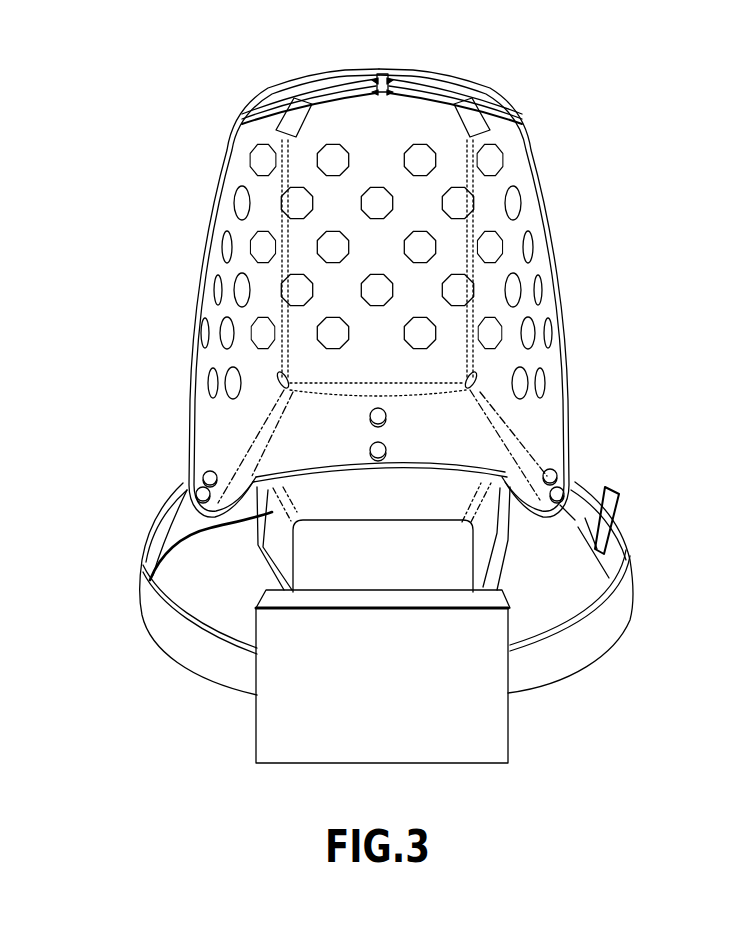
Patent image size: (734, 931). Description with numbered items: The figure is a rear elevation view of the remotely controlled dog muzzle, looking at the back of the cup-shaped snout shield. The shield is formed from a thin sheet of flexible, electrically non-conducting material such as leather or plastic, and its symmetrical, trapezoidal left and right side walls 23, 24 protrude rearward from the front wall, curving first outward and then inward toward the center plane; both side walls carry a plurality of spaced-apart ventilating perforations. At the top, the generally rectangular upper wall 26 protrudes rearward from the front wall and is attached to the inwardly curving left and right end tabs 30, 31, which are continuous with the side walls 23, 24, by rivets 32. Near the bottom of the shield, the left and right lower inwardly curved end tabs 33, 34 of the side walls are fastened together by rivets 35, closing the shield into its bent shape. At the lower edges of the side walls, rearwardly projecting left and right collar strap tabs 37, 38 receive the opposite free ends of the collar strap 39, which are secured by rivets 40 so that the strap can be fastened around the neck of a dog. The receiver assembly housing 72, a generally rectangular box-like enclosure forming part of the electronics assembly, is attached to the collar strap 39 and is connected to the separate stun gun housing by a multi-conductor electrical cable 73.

The left side wall 23 is at (213, 180).
The right side wall 24 is at (546, 180).
The upper wall 26 is at (341, 70).
The left end tab 30 is at (318, 77).
The right end tab 31 is at (453, 77).
The rivets 32 is at (300, 116).
The left lower inwardly curved end tab 33 is at (313, 435).
The right lower inwardly curved end tab 34 is at (455, 445).
The rivets 35 is at (386, 418).
The left collar strap tab 37 is at (243, 513).
The right collar strap tab 38 is at (545, 517).
The collar strap 39 is at (193, 668).
The rivets 40 is at (200, 476).
The receiver assembly housing 72 is at (510, 723).
The multi-conductor electrical cable 73 is at (211, 530).